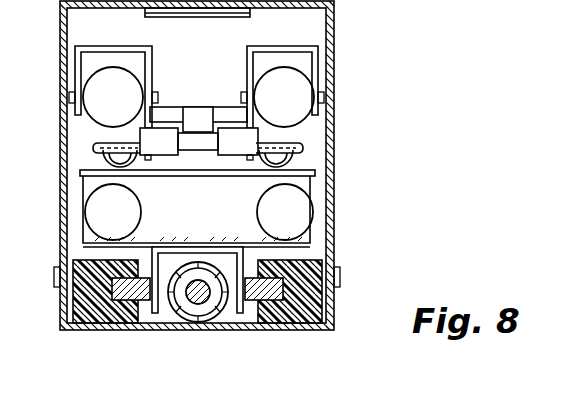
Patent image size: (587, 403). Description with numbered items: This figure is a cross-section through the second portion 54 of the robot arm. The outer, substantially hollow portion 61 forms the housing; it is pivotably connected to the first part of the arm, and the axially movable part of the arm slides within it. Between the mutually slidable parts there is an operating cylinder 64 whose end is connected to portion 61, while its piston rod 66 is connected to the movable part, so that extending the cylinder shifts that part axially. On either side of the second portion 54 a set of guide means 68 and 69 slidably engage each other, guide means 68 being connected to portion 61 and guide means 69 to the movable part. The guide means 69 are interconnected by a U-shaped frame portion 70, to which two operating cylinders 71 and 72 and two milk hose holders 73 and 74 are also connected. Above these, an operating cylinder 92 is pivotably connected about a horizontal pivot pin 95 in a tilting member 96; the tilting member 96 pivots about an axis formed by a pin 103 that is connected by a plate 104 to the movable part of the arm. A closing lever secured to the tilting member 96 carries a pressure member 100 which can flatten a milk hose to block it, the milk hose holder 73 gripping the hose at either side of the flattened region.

The second portion of robot arm 54 is at (60, 226).
The portion 61 is at (340, 43).
The operating cylinder 64 is at (180, 308).
The piston rod 66 is at (197, 304).
The guide means 68 is at (80, 300).
The guide means 69 is at (152, 302).
The U-shaped frame portion 70 is at (205, 220).
The operating cylinder 71 is at (102, 208).
The operating cylinder 72 is at (295, 212).
The milk hose holder 73 is at (95, 158).
The milk hose holder 74 is at (290, 160).
The operating cylinder 92 is at (100, 80).
The horizontal pivot pin 95 is at (70, 97).
The tilting member 96 is at (120, 30).
The pressure member 100 is at (93, 134).
The pin 103 is at (205, 150).
The plate 104 is at (192, 110).